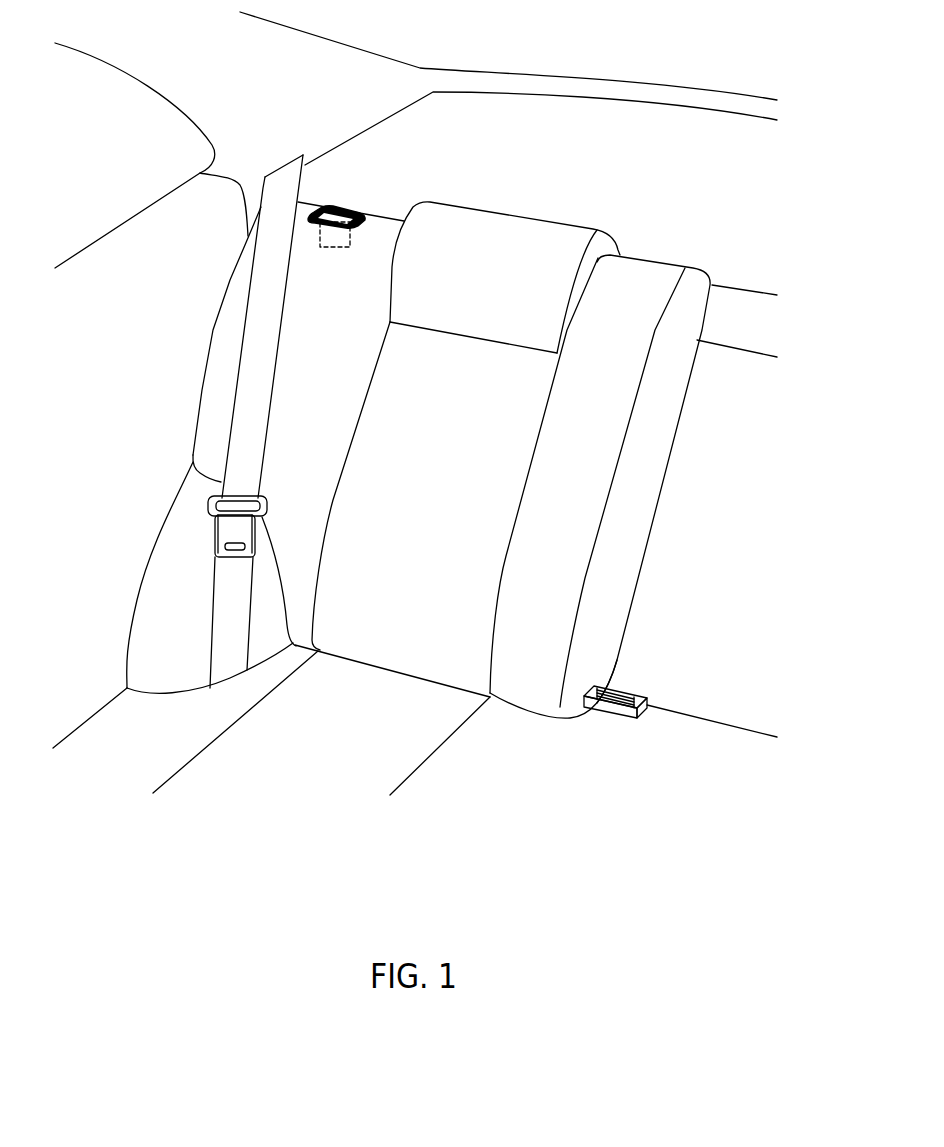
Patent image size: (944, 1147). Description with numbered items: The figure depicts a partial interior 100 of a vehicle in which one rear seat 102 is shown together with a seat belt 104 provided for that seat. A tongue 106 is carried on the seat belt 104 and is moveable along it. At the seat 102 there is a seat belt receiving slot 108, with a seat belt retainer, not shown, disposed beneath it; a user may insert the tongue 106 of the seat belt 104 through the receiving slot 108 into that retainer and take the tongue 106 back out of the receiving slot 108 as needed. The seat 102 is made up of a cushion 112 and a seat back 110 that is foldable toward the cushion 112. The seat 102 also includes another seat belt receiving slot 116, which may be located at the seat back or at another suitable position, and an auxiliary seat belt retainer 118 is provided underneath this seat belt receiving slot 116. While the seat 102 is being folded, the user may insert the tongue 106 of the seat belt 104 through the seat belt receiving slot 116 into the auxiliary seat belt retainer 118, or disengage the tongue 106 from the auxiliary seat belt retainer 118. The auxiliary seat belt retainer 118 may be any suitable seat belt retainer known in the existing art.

The partial interior 100 is at (815, 88).
The seat 102 is at (643, 285).
The seat belt 104 is at (243, 383).
The tongue 106 is at (217, 543).
The seat belt receiving slot 108 is at (627, 688).
The seat back 110 is at (573, 505).
The cushion 112 is at (390, 758).
The seat belt receiving slot 116 is at (340, 208).
The auxiliary seat belt retainer 118 is at (327, 247).